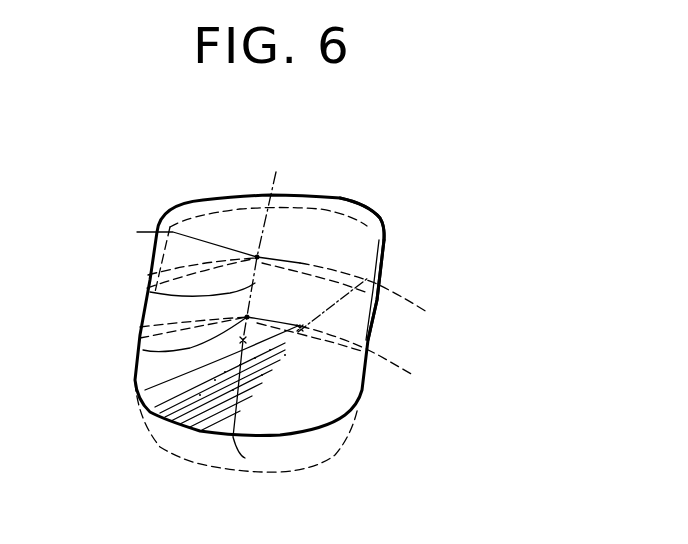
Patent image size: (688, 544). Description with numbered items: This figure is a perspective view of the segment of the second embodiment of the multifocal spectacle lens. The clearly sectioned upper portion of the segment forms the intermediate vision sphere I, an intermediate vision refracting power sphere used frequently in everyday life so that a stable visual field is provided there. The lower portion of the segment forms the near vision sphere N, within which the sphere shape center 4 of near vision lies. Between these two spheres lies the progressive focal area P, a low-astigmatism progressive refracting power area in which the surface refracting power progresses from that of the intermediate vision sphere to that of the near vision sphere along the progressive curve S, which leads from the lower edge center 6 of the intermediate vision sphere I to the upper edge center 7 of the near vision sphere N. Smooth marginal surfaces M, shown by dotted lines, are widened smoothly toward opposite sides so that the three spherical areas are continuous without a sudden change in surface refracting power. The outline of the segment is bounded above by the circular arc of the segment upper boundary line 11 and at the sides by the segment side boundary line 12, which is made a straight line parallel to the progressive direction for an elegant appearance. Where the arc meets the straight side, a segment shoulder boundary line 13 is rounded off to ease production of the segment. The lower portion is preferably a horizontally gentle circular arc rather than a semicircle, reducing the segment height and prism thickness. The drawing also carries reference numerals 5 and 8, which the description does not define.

The sphere shape center of near vision 4 is at (122, 397).
The central axis 5 is at (267, 193).
The lower edge center of the intermediate vision sphere 6 is at (235, 251).
The upper edge center of the near vision sphere 7 is at (140, 347).
The bottom contour 8 is at (240, 437).
The segment upper boundary line 11 is at (315, 198).
The segment side boundary line 12 is at (383, 262).
The segment shoulder boundary line 13 is at (368, 212).
The progressive curve S is at (147, 290).
The intermediate vision sphere I is at (306, 228).
The progressive focal area P is at (325, 317).
The near vision sphere N is at (306, 398).
The marginal surface M is at (462, 323).